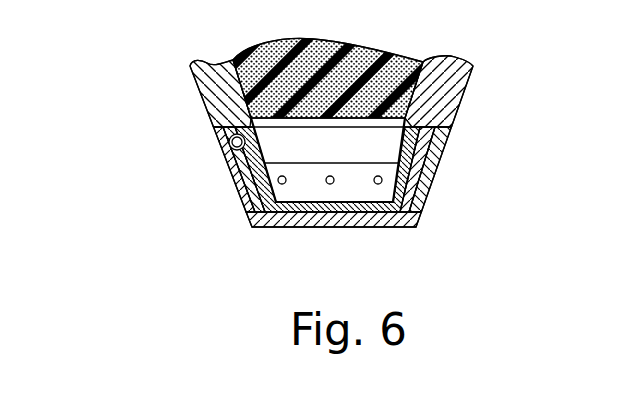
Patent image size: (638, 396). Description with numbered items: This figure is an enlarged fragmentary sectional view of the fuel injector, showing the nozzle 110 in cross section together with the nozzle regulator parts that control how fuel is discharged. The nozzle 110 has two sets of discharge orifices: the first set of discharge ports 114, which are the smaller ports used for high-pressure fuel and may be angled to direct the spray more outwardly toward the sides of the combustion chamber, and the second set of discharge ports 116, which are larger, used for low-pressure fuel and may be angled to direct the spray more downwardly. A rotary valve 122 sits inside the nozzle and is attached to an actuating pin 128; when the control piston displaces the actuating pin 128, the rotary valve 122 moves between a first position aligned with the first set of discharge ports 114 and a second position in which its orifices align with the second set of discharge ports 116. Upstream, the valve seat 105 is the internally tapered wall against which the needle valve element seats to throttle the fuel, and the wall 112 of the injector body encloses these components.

The valve seat 105 is at (471, 77).
The nozzle 110 is at (426, 212).
The side wall 112 is at (241, 208).
The first set of discharge ports 114 is at (282, 184).
The second set of discharge ports 116 is at (330, 184).
The rotary valve 122 is at (371, 212).
The actuating pin 128 is at (230, 148).